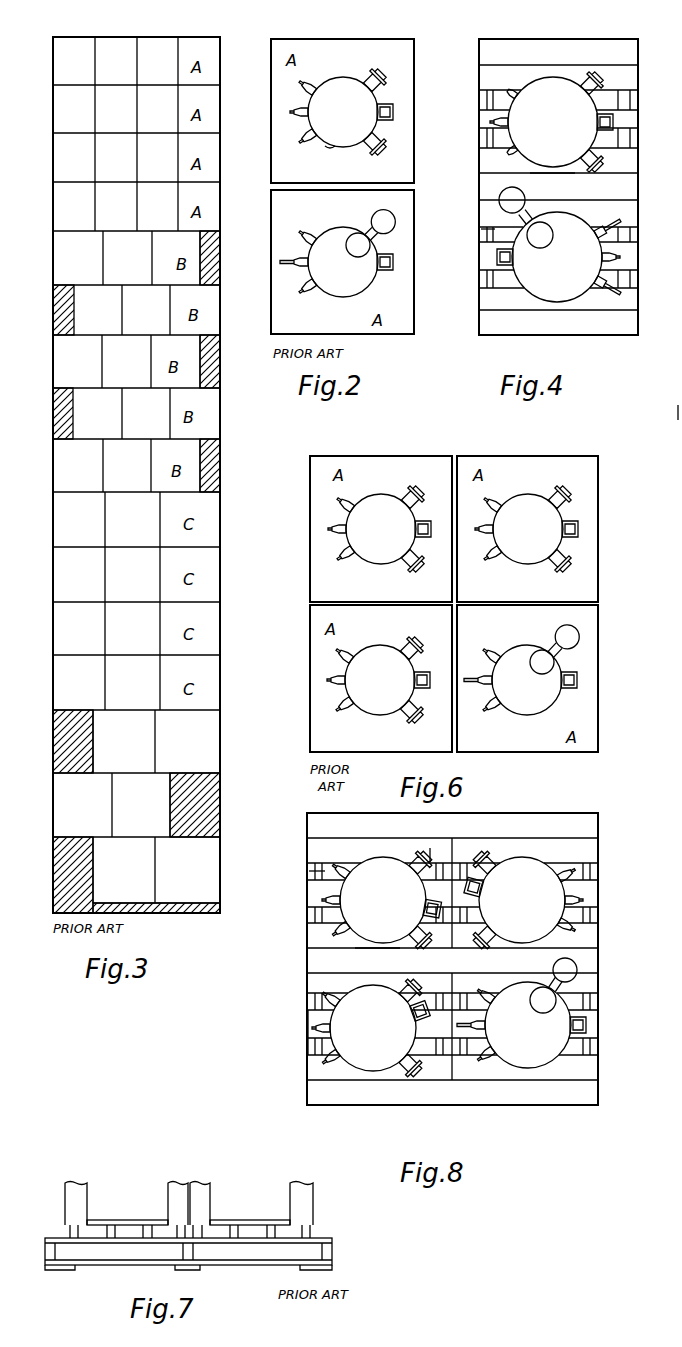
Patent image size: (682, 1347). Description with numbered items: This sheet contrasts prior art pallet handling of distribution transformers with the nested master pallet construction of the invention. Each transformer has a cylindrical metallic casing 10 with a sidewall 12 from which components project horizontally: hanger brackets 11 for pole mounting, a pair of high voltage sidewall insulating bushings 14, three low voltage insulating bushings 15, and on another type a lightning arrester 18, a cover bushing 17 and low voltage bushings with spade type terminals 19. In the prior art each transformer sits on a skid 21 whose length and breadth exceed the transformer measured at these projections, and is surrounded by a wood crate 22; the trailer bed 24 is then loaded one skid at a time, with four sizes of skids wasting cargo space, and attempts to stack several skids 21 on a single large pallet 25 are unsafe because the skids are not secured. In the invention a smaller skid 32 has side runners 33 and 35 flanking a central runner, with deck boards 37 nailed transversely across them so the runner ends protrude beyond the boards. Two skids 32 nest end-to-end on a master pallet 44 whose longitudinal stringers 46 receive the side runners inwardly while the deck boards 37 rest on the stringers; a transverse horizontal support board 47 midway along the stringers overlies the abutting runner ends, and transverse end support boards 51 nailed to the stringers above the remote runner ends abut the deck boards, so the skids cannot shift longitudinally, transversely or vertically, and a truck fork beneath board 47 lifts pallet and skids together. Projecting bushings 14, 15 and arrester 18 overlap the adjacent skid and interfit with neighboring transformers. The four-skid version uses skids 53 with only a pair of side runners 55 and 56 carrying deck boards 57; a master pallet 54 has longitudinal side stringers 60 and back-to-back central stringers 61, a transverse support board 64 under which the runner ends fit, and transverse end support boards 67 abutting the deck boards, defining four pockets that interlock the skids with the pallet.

In FIG. 2, the casing 10 is at (335, 77).
In FIG. 4, the casing 10 is at (560, 100).
In FIG. 6, the casing 10 is at (393, 523).
In FIG. 8, the casing 10 is at (388, 891).
In FIG. 2, the hanger brackets 11 is at (392, 112).
In FIG. 4, the hanger brackets 11 is at (555, 189).
In FIG. 6, the hanger brackets 11 is at (583, 533).
In FIG. 8, the hanger brackets 11 is at (498, 955).
In FIG. 2, the sidewall 12 is at (330, 148).
In FIG. 2, the high voltage sidewall insulating bushings 14 is at (390, 70).
In FIG. 4, the high voltage sidewall insulating bushings 14 is at (590, 168).
In FIG. 6, the high voltage sidewall insulating bushings 14 is at (420, 484).
In FIG. 8, the high voltage sidewall insulating bushings 14 is at (498, 956).
In FIG. 2, the low voltage insulating bushings 15 is at (305, 133).
In FIG. 4, the low voltage insulating bushings 15 is at (500, 118).
In FIG. 6, the low voltage insulating bushings 15 is at (342, 549).
In FIG. 8, the low voltage insulating bushings 15 is at (447, 964).
In FIG. 2, the high voltage insulating bushing 17 is at (357, 258).
In FIG. 4, the high voltage insulating bushing 17 is at (540, 235).
In FIG. 6, the high voltage insulating bushing 17 is at (542, 662).
In FIG. 8, the high voltage insulating bushing 17 is at (543, 1000).
In FIG. 2, the lightning arrester 18 is at (375, 217).
In FIG. 4, the lightning arrester 18 is at (500, 198).
In FIG. 6, the lightning arrester 18 is at (562, 634).
In FIG. 8, the lightning arrester 18 is at (578, 970).
In FIG. 2, the spade type terminals 19 is at (300, 288).
In FIG. 6, the spade type terminals 19 is at (478, 650).
In FIG. 8, the spade type terminals 19 is at (471, 1025).
In FIG. 3, the skids 21 is at (195, 40).
In FIG. 2, the skids 21 is at (313, 42).
In FIG. 6, the skids 21 is at (312, 616).
In FIG. 7, the skids 21 is at (124, 1221).
In FIG. 7, the wood crate 22 is at (65, 1200).
In FIG. 3, the bed 24 is at (220, 808).
In FIG. 4, the bed 24 is at (680, 411).
In FIG. 7, the large pallet 25 is at (333, 1252).
In FIG. 4, the skid 32 is at (522, 73).
In FIG. 4, the side runner 33 is at (487, 232).
In FIG. 4, the side runner 35 is at (636, 232).
In FIG. 4, the deck boards 37 is at (630, 83).
In FIG. 4, the master pallet 44 is at (648, 204).
In FIG. 4, the longitudinal side stringers 46 is at (636, 280).
In FIG. 4, the transverse horizontal support board 47 is at (535, 183).
In FIG. 4, the transverse end support boards 51 is at (578, 46).
In FIG. 8, the skids 53 is at (558, 846).
In FIG. 4, the master pallet 54 is at (640, 158).
In FIG. 8, the master pallet 54 is at (610, 974).
In FIG. 8, the side runner 55 is at (318, 878).
In FIG. 8, the side runner 56 is at (443, 862).
In FIG. 8, the deck boards 57 is at (310, 1062).
In FIG. 8, the longitudinal stringers 60 is at (314, 871).
In FIG. 8, the central stringers 61 is at (457, 862).
In FIG. 8, the transverse horizontal support board 64 is at (368, 961).
In FIG. 8, the transverse end support boards 67 is at (520, 816).